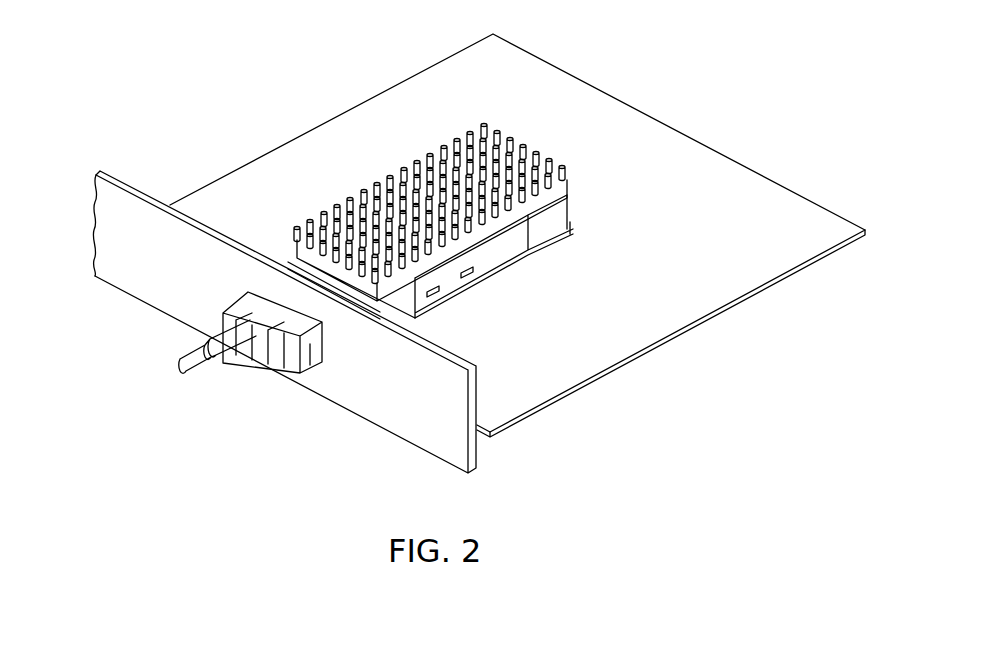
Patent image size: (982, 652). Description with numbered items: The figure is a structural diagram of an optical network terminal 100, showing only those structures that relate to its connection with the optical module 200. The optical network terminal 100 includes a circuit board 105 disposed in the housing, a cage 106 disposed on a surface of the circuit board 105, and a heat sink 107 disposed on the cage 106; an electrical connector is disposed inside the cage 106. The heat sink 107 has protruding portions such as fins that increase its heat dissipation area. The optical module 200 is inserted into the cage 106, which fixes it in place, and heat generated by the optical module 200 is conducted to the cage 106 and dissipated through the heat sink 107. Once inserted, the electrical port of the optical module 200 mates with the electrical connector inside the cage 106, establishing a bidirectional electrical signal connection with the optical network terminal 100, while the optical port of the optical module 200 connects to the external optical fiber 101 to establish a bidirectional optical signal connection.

The optical network terminal 100 is at (257, 123).
The optical fiber 101 is at (215, 348).
The circuit board 105 is at (543, 370).
The cage 106 is at (497, 247).
The heat sink 107 is at (410, 192).
The optical module 200 is at (313, 349).